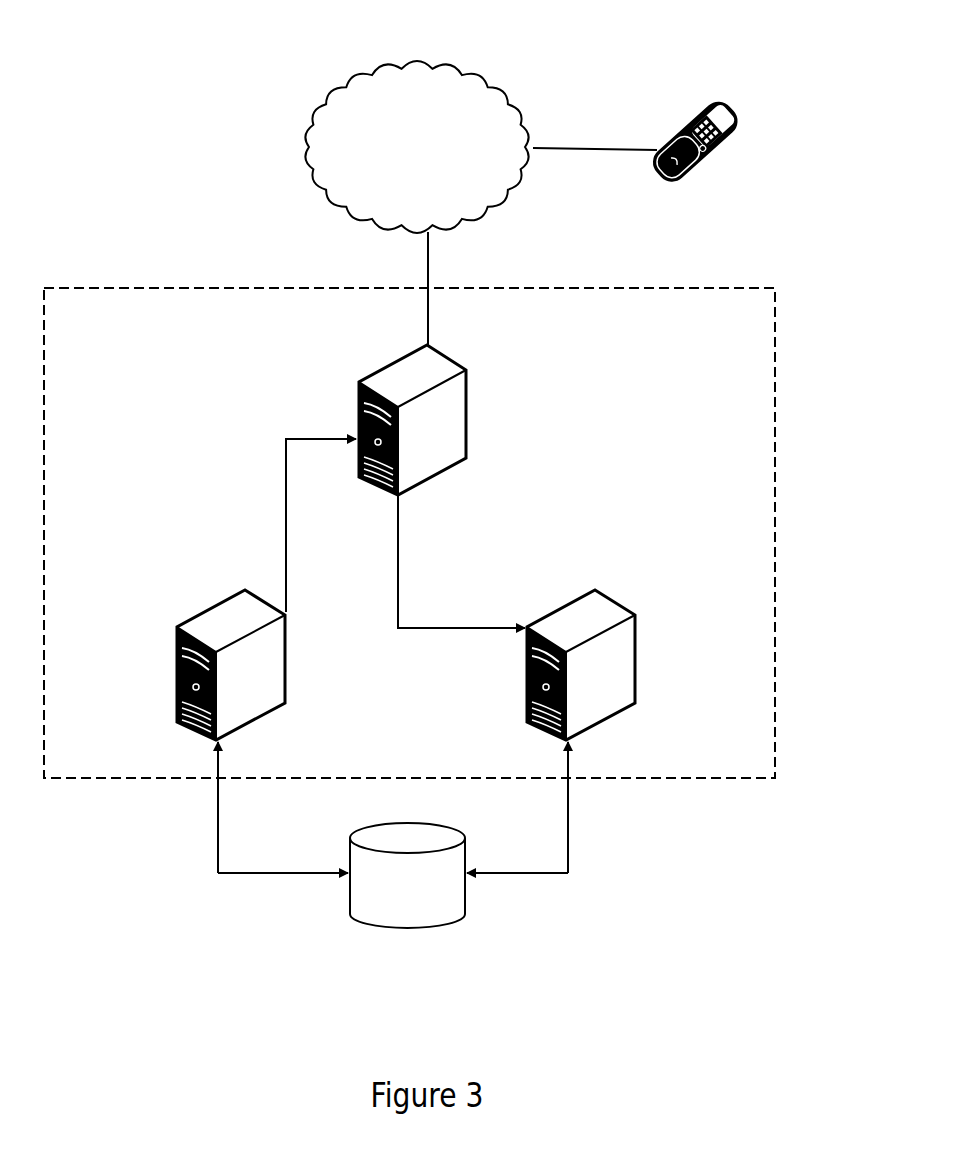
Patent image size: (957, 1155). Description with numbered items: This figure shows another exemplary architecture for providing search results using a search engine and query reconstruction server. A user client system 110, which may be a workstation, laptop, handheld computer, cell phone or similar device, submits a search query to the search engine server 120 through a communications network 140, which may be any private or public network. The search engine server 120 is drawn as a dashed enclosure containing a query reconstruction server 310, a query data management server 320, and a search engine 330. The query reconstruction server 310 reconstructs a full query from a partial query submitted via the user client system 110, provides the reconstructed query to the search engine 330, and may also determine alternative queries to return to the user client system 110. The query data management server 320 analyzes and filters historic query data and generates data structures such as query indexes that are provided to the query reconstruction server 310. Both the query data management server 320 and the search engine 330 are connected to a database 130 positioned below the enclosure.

The user client system 110 is at (735, 134).
The search engine server 120 is at (725, 339).
The database 130 is at (407, 928).
The communications network 140 is at (303, 147).
The query reconstruction server 310 is at (357, 405).
The query data management server 320 is at (177, 627).
The search engine 330 is at (637, 627).